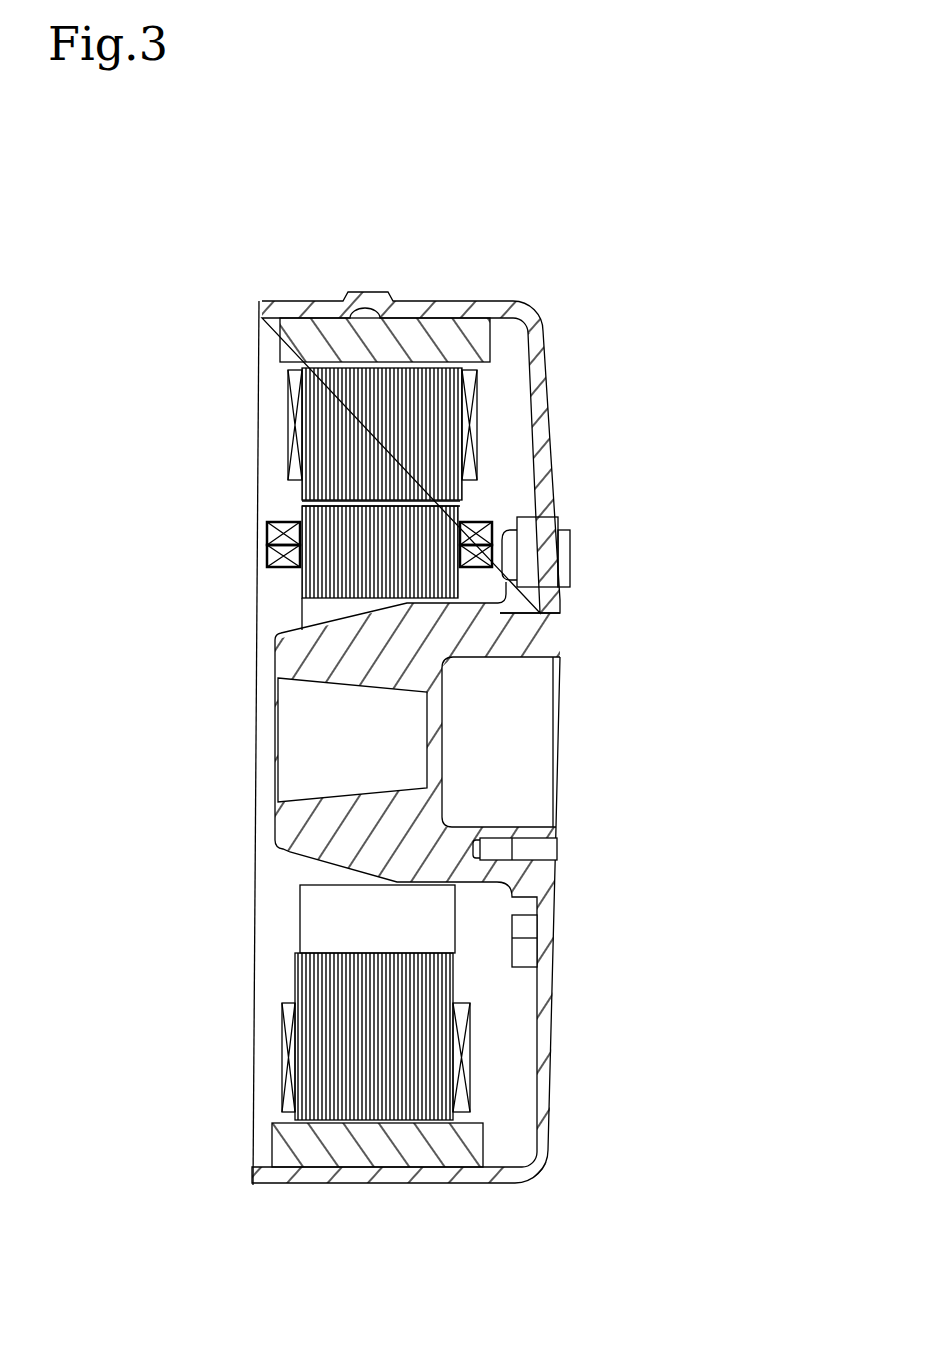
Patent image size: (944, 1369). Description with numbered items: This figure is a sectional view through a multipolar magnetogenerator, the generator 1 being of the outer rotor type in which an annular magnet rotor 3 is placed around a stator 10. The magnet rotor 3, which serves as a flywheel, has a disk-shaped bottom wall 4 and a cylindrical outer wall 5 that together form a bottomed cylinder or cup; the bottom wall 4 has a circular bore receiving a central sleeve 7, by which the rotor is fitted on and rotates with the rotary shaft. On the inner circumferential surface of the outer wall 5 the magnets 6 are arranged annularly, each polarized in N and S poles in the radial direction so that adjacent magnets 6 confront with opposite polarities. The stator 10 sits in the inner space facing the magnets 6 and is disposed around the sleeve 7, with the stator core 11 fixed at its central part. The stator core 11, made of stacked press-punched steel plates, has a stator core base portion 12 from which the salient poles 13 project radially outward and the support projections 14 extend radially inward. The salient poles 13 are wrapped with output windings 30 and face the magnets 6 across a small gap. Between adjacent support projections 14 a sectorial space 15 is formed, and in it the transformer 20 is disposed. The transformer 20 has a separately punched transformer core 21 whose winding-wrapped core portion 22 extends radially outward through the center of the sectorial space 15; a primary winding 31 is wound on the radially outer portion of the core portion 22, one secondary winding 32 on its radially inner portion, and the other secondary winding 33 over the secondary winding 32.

The generator 1 is at (382, 236).
The magnet rotor 3 is at (455, 420).
The bottom wall 4 is at (555, 460).
The cylindrical outer wall 5 is at (422, 300).
The magnet 6 is at (280, 340).
The sleeve 7 is at (302, 872).
The stator 10 is at (244, 1009).
The stator core 11 is at (358, 739).
The stator core base portion 12 is at (300, 490).
The salient pole 13 is at (437, 390).
The support projection 14 is at (300, 917).
The sectorial space 15 is at (442, 927).
The transformer 20 is at (499, 526).
The transformer core 21 is at (298, 508).
The winding-wrapped core portion 22 is at (303, 600).
The output winding 30 is at (290, 413).
The primary winding 31 is at (270, 533).
The secondary winding 32 is at (335, 568).
The secondary winding 33 is at (270, 553).